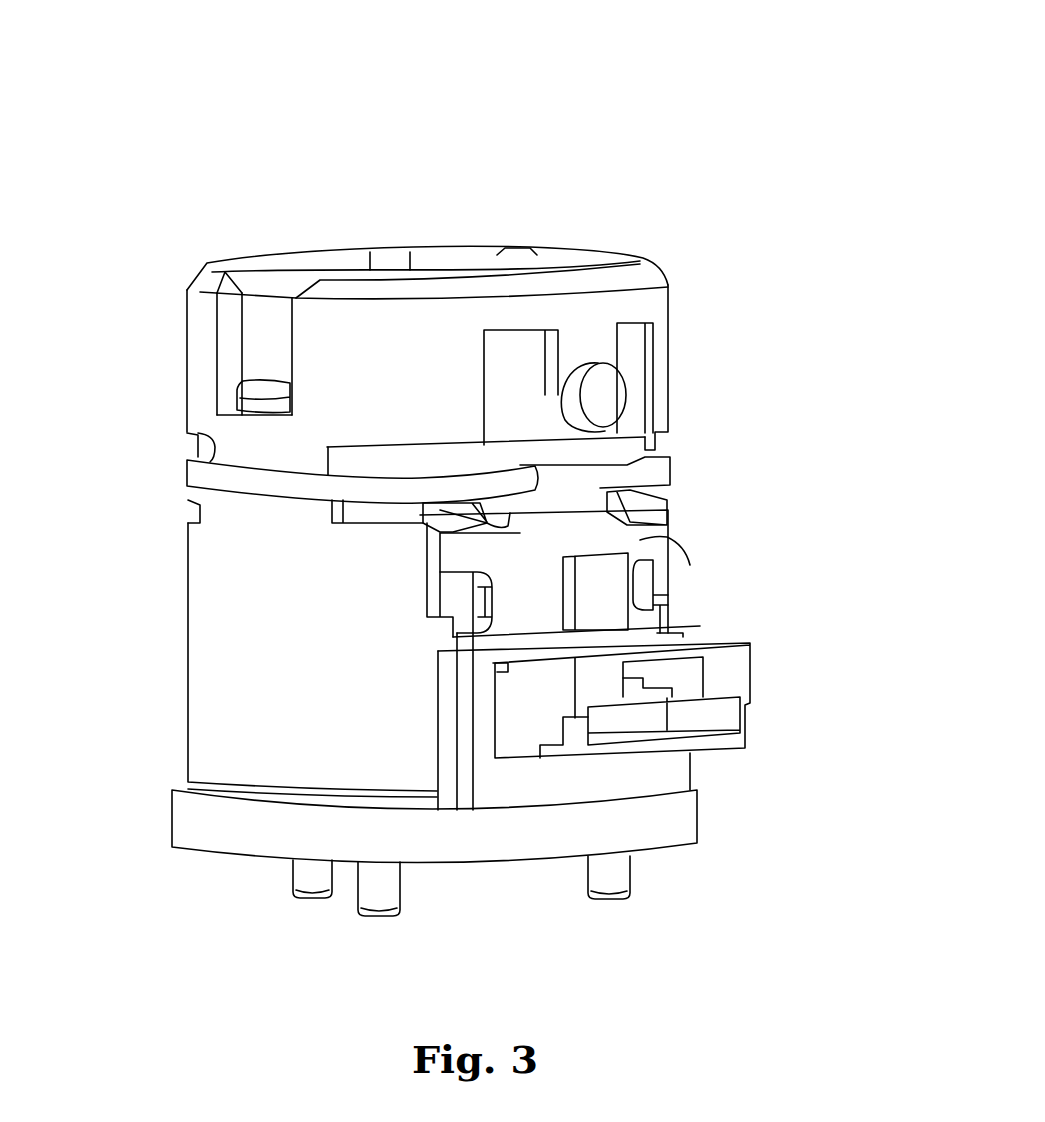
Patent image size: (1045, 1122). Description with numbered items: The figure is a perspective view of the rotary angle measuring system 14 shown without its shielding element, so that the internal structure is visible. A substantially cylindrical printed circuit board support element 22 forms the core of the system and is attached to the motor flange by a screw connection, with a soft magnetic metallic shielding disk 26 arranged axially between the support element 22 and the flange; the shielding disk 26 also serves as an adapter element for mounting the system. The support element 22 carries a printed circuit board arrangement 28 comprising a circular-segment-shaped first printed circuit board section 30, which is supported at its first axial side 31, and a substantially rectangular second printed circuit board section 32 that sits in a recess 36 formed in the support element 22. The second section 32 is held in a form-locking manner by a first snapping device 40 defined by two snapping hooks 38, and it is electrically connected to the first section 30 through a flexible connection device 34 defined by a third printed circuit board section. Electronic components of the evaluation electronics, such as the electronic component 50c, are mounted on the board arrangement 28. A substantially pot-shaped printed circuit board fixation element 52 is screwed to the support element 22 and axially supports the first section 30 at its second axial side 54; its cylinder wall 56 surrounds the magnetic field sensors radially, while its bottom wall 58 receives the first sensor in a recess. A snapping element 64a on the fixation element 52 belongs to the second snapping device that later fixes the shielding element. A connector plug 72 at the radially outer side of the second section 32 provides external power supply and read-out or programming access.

The rotary angle measuring system 14 is at (630, 130).
The printed circuit board support element 22 is at (243, 670).
The shielding disk 26 is at (210, 823).
The printed circuit board arrangement 28 is at (712, 442).
The first printed circuit board section 30 is at (205, 482).
The first axial side 31 is at (214, 498).
The second printed circuit board section 32 is at (641, 540).
The connection device 34 is at (608, 480).
The recess 36 is at (457, 600).
The snapping hooks 38 is at (660, 497).
The first snapping device 40 is at (695, 503).
The electronic component 50c is at (606, 598).
The printed circuit board fixation element 52 is at (676, 258).
The second axial side 54 is at (190, 430).
The cylinder wall 56 is at (205, 349).
The bottom wall 58 is at (225, 262).
The snapping element 64a is at (607, 398).
The connector plug 72 is at (766, 720).